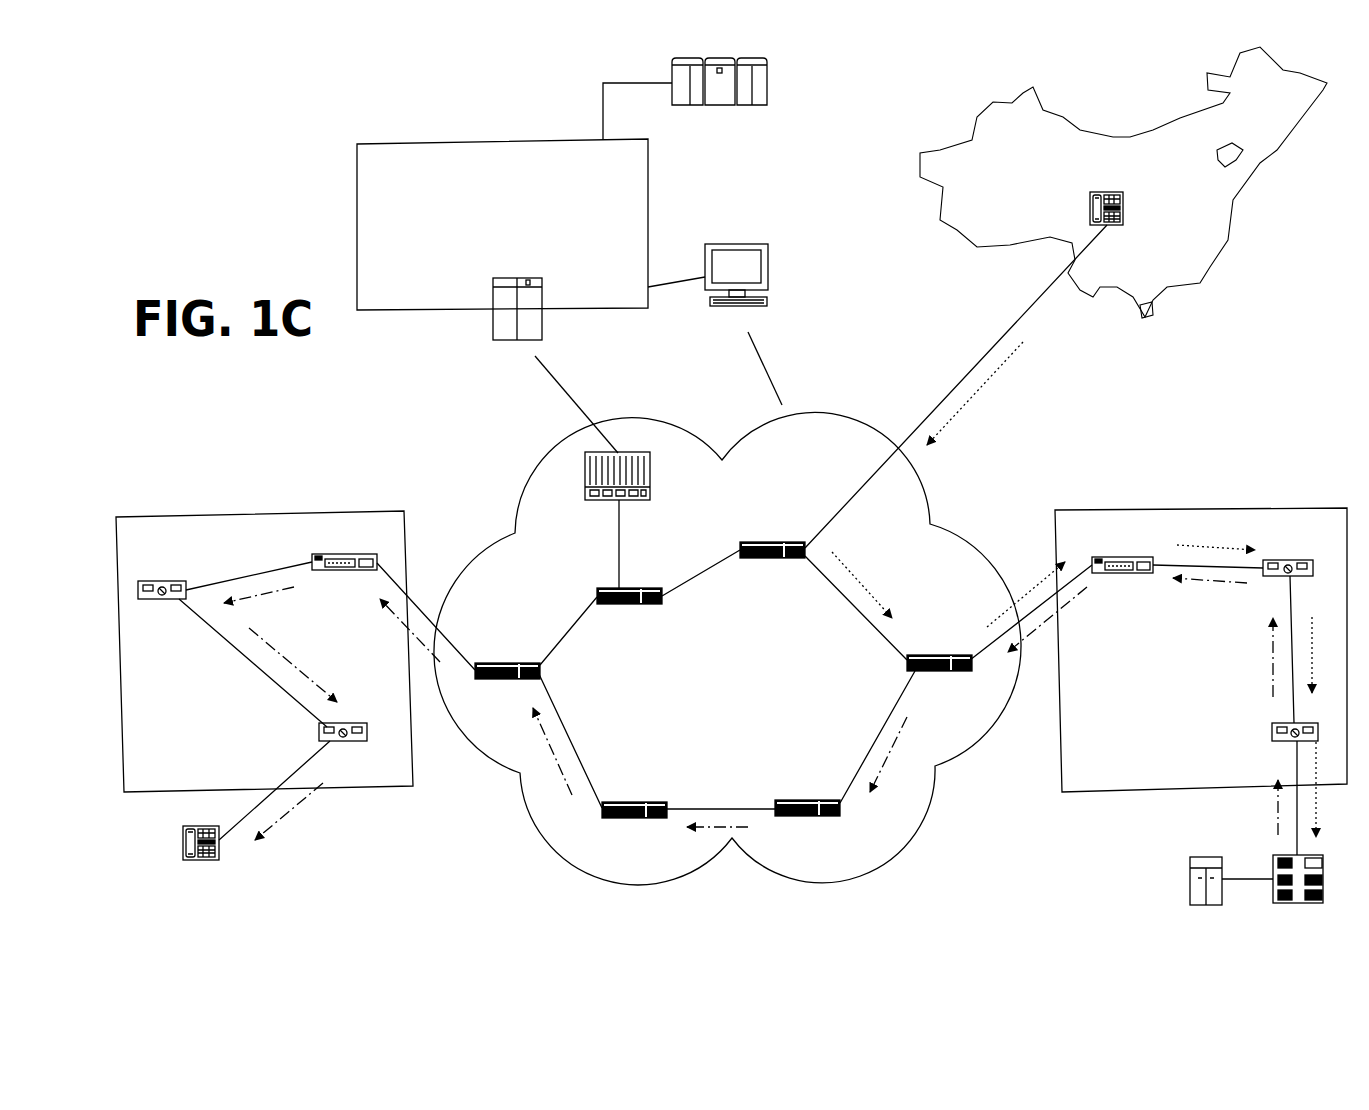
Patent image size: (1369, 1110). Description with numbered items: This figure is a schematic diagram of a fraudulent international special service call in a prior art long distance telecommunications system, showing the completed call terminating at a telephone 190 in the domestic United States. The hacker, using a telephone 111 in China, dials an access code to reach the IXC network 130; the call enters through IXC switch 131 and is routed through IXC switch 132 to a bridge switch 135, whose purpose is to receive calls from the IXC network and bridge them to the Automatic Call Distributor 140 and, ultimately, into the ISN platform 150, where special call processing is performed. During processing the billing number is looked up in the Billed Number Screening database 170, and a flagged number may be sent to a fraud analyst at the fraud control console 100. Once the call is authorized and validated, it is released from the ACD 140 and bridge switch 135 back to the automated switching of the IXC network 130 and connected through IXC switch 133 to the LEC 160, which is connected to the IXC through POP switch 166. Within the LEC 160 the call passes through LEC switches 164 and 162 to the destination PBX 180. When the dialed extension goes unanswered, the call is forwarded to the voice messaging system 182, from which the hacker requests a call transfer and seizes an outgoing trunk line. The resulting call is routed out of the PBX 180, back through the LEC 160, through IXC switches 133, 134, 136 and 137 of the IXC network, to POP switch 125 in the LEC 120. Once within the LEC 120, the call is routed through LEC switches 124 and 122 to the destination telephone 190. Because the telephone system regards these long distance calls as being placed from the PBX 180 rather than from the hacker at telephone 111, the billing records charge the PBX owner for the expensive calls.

The fraud control console 100 is at (768, 256).
The telephone 111 is at (1123, 207).
The LEC 120 is at (201, 517).
The LEC switch 122 is at (319, 727).
The LEC switch 124 is at (160, 581).
The POP switch 125 is at (316, 554).
The IXC network 130 is at (810, 405).
The IXC switch 131 is at (774, 542).
The IXC switch 132 is at (630, 588).
The IXC switch 133 is at (938, 655).
The IXC switch 134 is at (802, 800).
The bridge switch 135 is at (650, 478).
The IXC switch 136 is at (632, 802).
The IXC switch 137 is at (495, 663).
The Automatic Call Distributor 140 is at (493, 329).
The ISN platform 150 is at (436, 141).
The LEC 160 is at (1190, 508).
The LEC switch 162 is at (1272, 732).
The LEC switch 164 is at (1288, 560).
The POP switch 166 is at (1125, 557).
The Billed Number Screening database 170 is at (767, 90).
The PBX 180 is at (1273, 865).
The voice messaging system 182 is at (1190, 870).
The telephone 190 is at (197, 860).